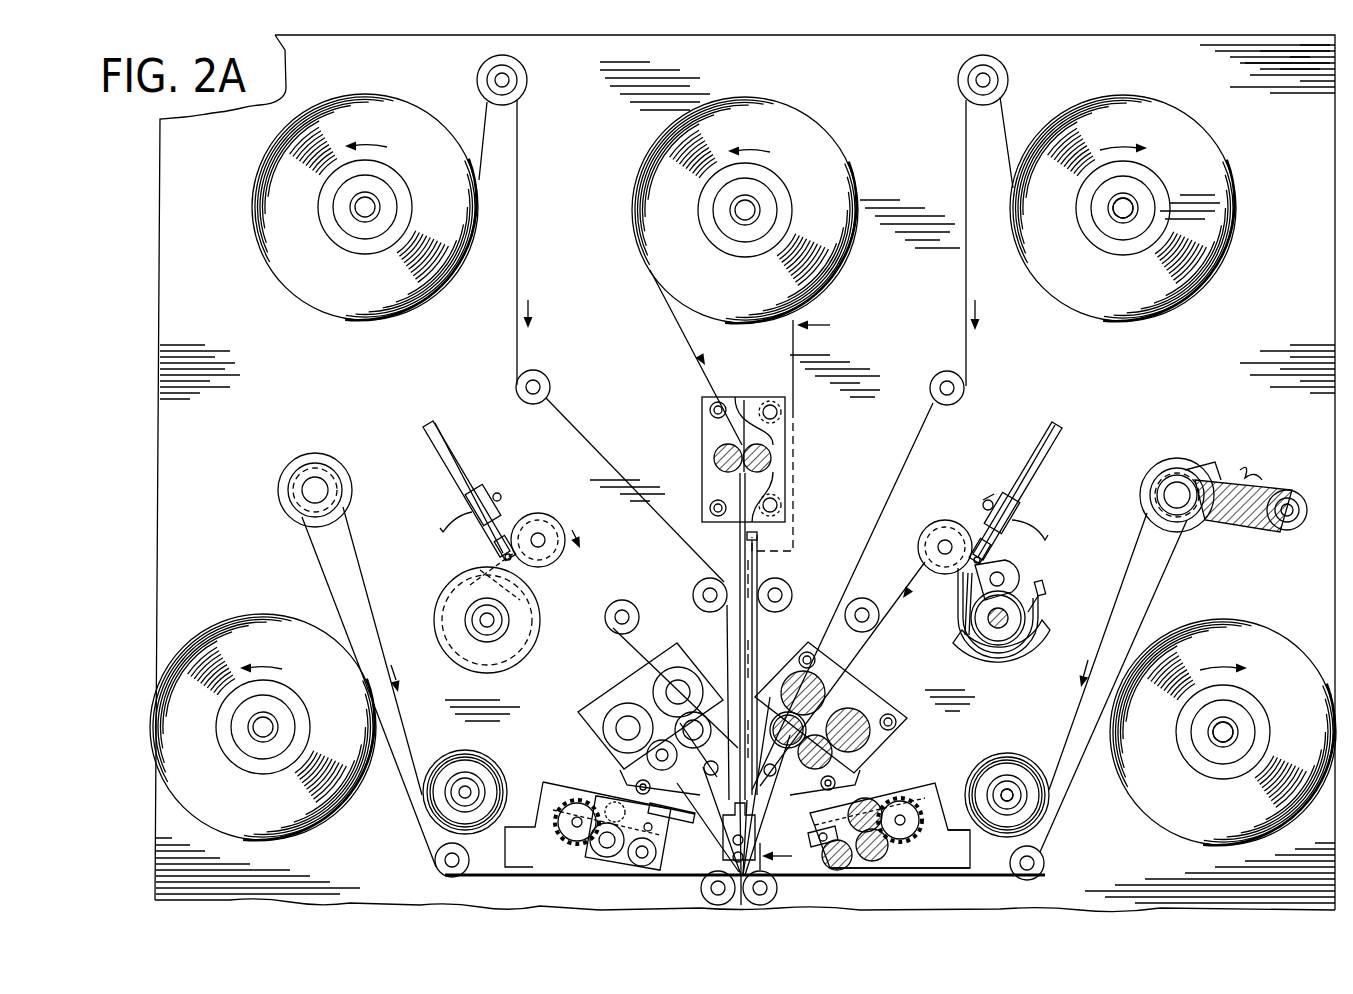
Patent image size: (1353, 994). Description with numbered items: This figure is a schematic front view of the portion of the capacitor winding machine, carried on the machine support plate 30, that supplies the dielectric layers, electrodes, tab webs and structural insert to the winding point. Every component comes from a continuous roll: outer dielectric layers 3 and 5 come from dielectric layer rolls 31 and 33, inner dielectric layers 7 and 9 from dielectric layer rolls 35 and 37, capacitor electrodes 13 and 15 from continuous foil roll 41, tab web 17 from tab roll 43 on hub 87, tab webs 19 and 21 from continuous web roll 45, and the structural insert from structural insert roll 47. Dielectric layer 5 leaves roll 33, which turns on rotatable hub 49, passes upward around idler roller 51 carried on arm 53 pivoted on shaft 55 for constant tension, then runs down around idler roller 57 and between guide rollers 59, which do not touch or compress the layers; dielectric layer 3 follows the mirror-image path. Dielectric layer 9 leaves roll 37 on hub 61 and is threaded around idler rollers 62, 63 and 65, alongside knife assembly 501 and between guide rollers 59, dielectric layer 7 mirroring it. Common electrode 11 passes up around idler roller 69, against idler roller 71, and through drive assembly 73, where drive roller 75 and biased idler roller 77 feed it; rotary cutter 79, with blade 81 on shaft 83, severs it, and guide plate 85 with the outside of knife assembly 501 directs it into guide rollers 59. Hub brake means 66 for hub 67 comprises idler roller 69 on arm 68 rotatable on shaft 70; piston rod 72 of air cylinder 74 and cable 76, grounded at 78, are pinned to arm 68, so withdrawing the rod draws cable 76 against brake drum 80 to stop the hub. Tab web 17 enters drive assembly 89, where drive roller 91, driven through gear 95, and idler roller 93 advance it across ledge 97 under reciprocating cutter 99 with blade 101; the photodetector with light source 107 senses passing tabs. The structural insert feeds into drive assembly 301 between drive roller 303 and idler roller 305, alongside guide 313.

The outer dielectric layer 3 is at (313, 548).
The outer dielectric layer 5 is at (1180, 548).
The inner dielectric layer 7 is at (521, 245).
The inner dielectric layer 9 is at (964, 160).
The common electrode 11 is at (920, 560).
The capacitor electrode 13 is at (546, 502).
The capacitor electrode 15 is at (469, 491).
The tab web 17 is at (980, 836).
The tab web 19 is at (541, 852).
The tab web 21 is at (577, 822).
The machine support plate 30 is at (305, 420).
The dielectric layer roll 31 is at (237, 806).
The dielectric layer roll 33 is at (1183, 786).
The dielectric layer roll 35 is at (305, 223).
The dielectric layer roll 37 is at (1200, 178).
The continuous foil roll 41 is at (455, 636).
The tab roll 43 is at (1012, 765).
The continuous web roll 45 is at (452, 752).
The structural insert roll 47 is at (815, 158).
The rotatable hub 49 is at (1228, 730).
The idler roller 51 is at (1170, 470).
The arm 53 is at (1258, 520).
The shaft 55 is at (1290, 490).
The idler roller 57 is at (1045, 865).
The guide rollers 59 is at (700, 888).
The hub 61 is at (1128, 212).
The idler roller 62 is at (1008, 80).
The idler roller 63 is at (965, 381).
The idler roller 65 is at (786, 592).
The hub brake means 66 is at (1031, 585).
The hub 67 is at (1060, 650).
The arm 68 is at (1001, 565).
The idler roller 69 is at (930, 540).
The shaft 70 is at (1006, 578).
The idler roller 71 is at (858, 600).
The piston rod 72 is at (985, 522).
The drive assembly 73 is at (839, 758).
The air cylinder 74 is at (1032, 460).
The drive roller 75 is at (782, 716).
The cable 76 is at (1032, 612).
The idler roller 77 is at (840, 760).
The ground point 78 is at (1050, 586).
The rotary cutter 79 is at (785, 793).
The brake drum 80 is at (1003, 634).
The blade 81 is at (710, 776).
The shaft 83 is at (776, 811).
The guide plate 85 is at (845, 775).
The hub 87 is at (1015, 795).
The drive assembly 89 is at (942, 765).
The drive roller 91 is at (908, 820).
The idler roller 93 is at (878, 800).
The gear 95 is at (902, 843).
The ledge 97 is at (840, 869).
The reciprocating cutter 99 is at (625, 798).
The blade 101 is at (603, 843).
The light source 107 is at (686, 824).
The drive assembly 301 is at (737, 459).
The drive roller 303 is at (771, 458).
The idler roller 305 is at (714, 458).
The guide 313 is at (732, 548).
The knife assembly 501 is at (755, 835).